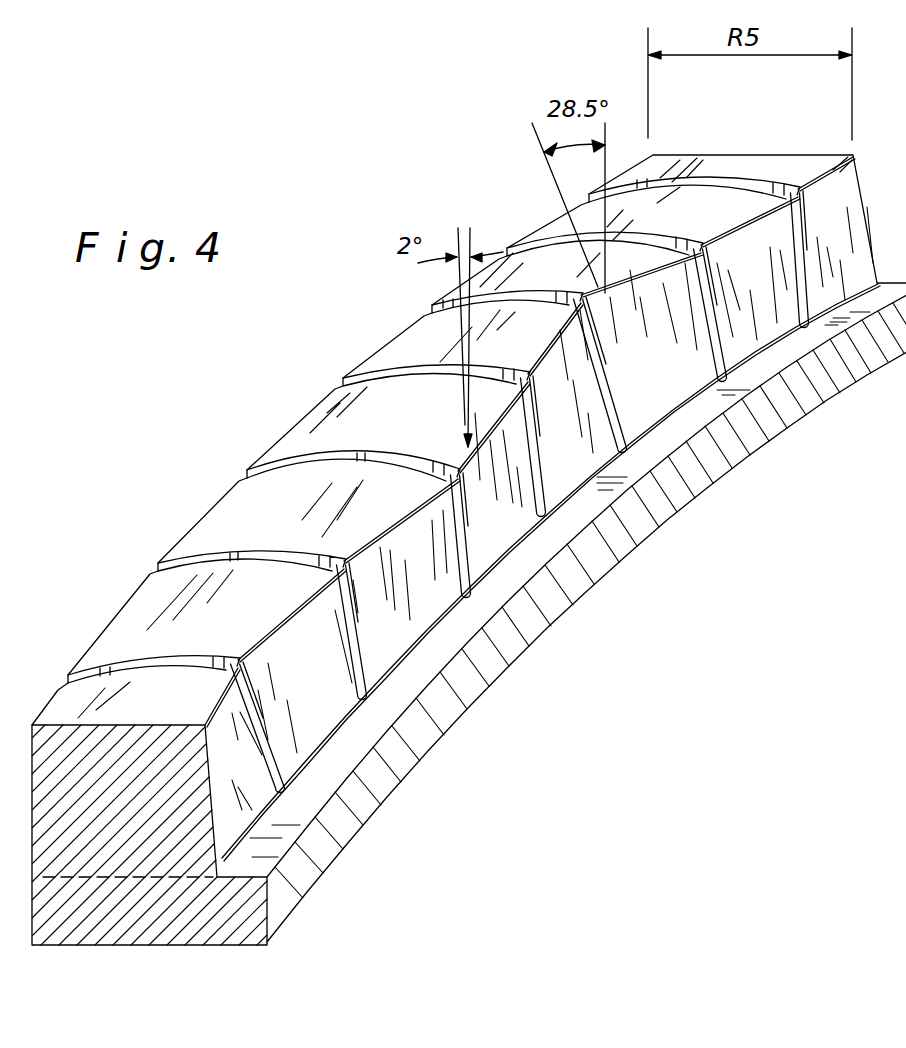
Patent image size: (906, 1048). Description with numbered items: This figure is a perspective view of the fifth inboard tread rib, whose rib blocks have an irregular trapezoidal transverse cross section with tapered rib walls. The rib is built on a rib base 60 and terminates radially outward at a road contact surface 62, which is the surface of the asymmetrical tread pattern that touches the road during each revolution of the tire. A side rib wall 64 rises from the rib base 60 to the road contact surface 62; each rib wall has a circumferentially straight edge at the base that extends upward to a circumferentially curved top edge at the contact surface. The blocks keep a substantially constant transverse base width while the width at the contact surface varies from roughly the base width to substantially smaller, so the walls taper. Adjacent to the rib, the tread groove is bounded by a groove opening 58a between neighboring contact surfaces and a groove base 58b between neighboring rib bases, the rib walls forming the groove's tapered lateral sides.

The rib base 60 is at (147, 878).
The road contact surface 62 is at (373, 423).
The side rib wall 64 is at (330, 666).
The groove opening 58a is at (668, 393).
The groove base 58b is at (537, 543).